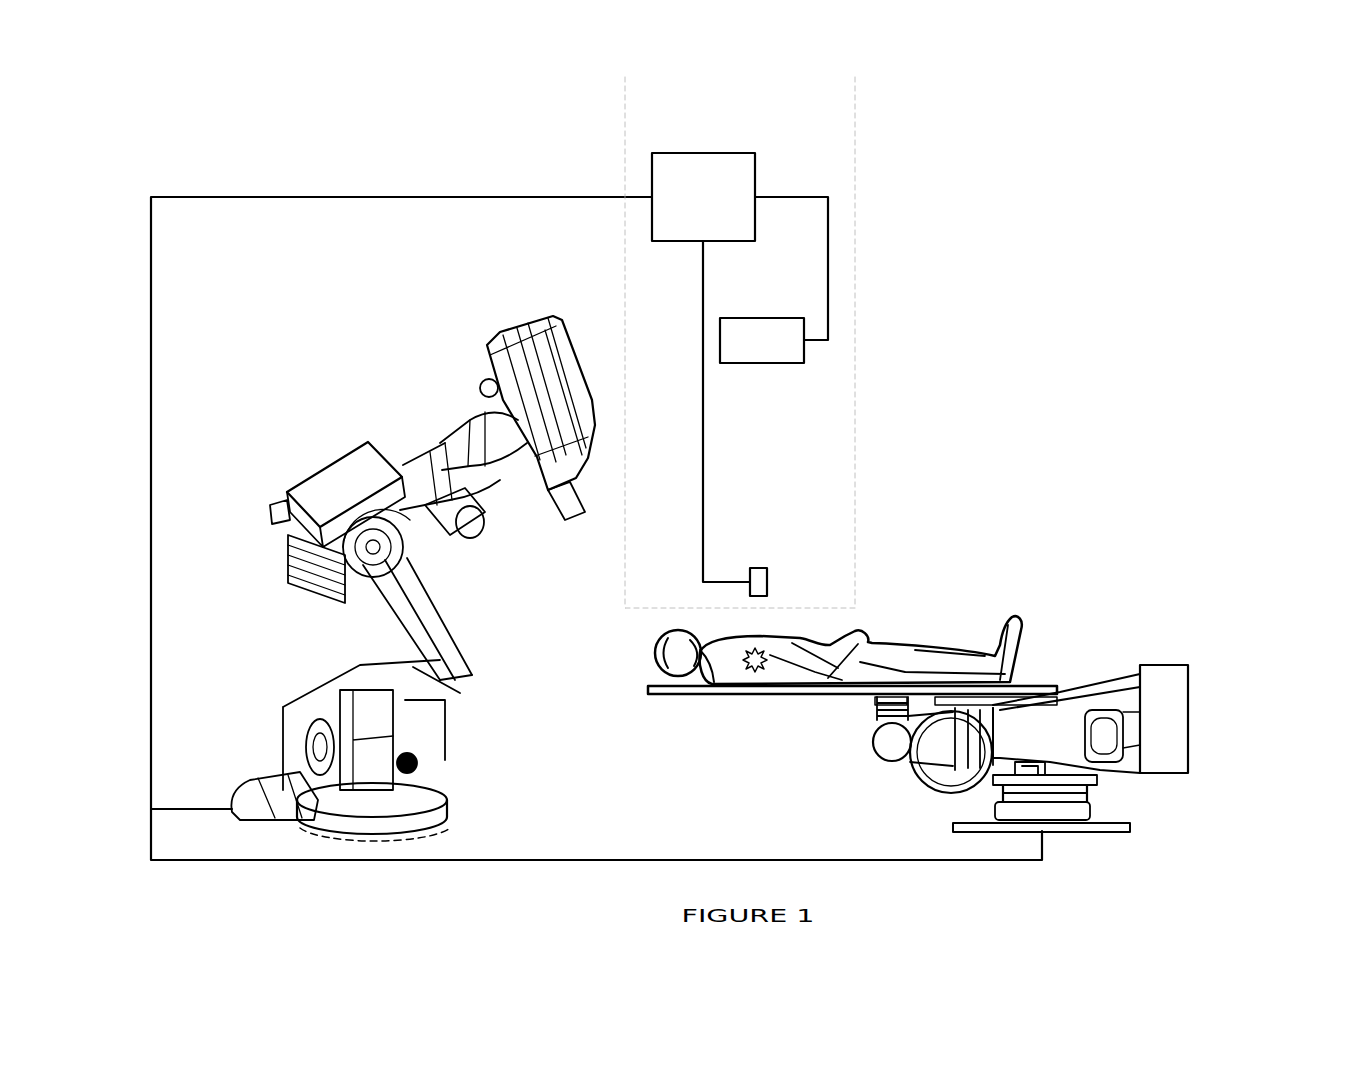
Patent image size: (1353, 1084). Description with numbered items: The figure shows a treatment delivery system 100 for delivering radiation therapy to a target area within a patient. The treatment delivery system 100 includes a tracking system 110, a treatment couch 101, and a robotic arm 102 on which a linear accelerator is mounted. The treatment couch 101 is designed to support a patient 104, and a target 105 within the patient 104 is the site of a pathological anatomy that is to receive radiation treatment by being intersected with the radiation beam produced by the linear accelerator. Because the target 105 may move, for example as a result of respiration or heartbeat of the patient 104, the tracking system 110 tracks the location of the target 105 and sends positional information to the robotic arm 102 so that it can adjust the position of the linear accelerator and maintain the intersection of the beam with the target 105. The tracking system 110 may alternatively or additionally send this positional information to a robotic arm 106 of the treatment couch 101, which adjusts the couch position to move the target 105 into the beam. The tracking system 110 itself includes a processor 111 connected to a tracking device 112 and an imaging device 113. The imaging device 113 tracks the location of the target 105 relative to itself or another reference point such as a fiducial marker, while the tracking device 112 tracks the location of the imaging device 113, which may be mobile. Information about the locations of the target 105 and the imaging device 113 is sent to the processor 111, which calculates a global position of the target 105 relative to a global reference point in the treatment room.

The treatment delivery system 100 is at (1138, 184).
The treatment couch 101 is at (656, 702).
The robotic arm 102 is at (310, 458).
The patient 104 is at (978, 610).
The target 105 is at (756, 676).
The robotic arm 106 is at (1160, 648).
The tracking system 110 is at (722, 126).
The processor 111 is at (687, 209).
The tracking device 112 is at (832, 352).
The imaging device 113 is at (777, 561).